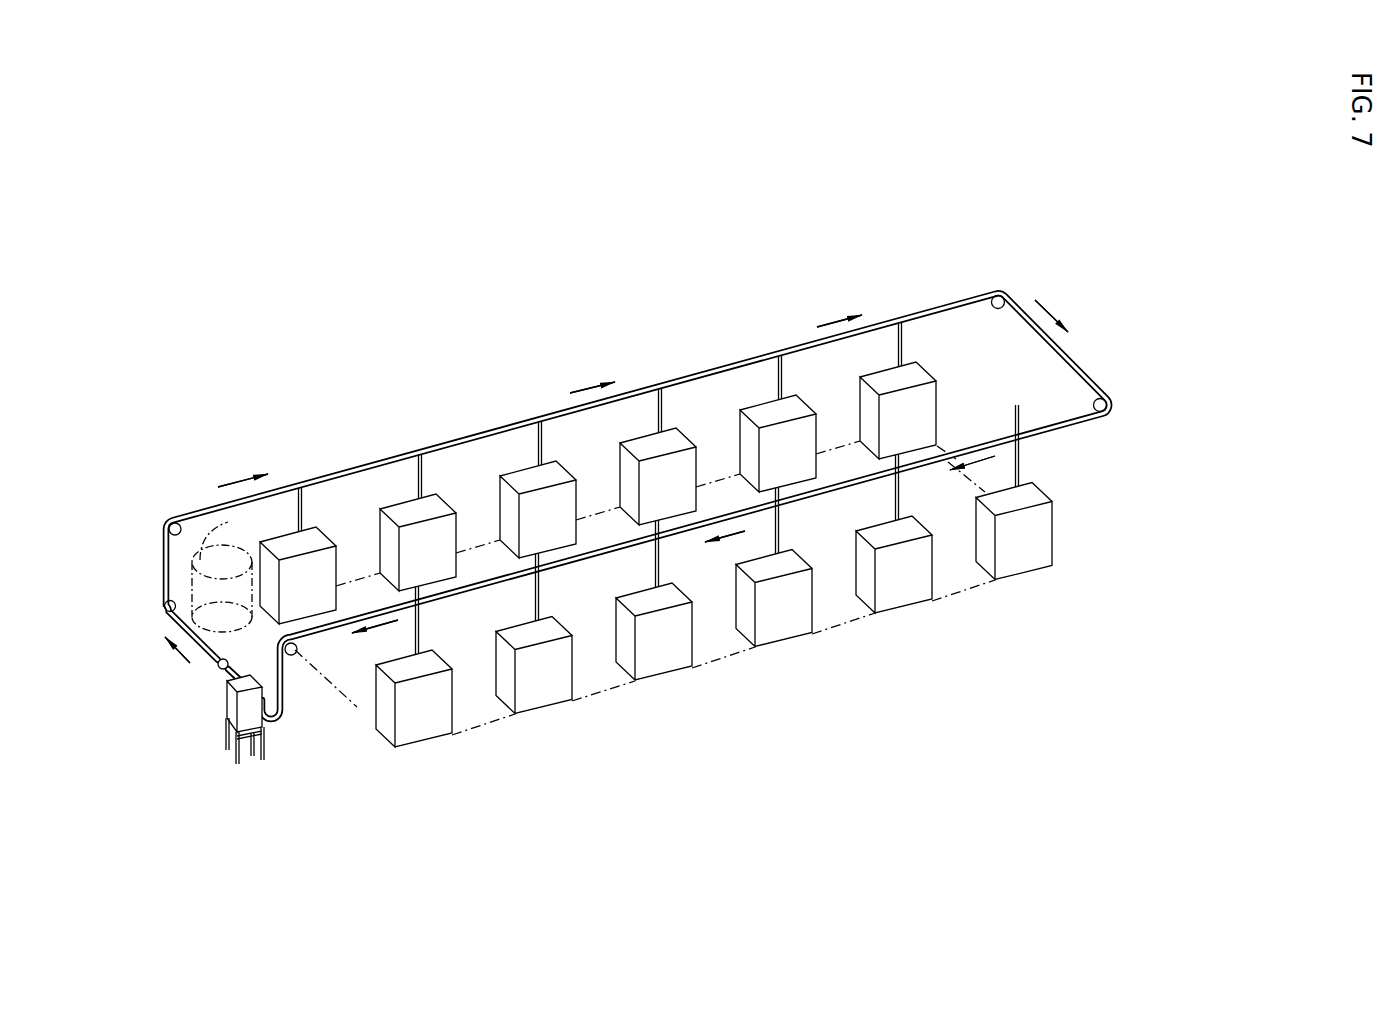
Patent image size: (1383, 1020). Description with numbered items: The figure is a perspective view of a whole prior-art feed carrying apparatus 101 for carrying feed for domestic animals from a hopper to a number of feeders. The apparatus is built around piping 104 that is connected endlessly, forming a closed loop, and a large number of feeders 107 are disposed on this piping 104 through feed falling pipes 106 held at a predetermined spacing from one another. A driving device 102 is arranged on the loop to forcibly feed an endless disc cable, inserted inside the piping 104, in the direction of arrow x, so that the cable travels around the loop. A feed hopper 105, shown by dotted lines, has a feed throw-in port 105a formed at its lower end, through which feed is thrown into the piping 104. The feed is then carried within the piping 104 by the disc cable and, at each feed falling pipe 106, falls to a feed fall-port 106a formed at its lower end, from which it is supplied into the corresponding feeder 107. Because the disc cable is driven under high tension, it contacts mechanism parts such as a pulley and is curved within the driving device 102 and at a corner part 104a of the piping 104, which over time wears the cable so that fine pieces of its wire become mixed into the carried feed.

The feed carrying apparatus 101 is at (560, 313).
The driving device 102 is at (226, 708).
The piping 104 is at (452, 438).
The corner part 104a is at (1115, 400).
The feed hopper 105 is at (190, 603).
The feed throw-in port 105a is at (213, 666).
The feed falling pipe 106 is at (541, 598).
The feed fall-port 106a is at (526, 633).
The feeder 107 is at (537, 693).